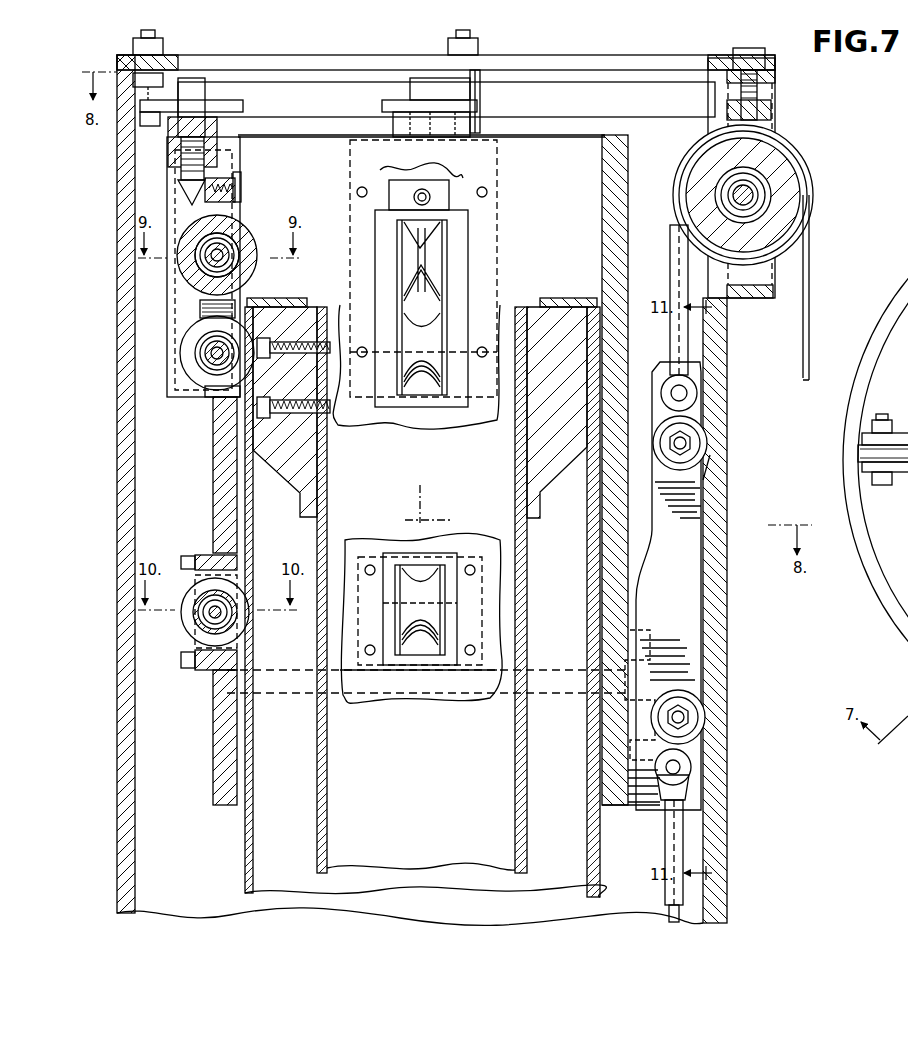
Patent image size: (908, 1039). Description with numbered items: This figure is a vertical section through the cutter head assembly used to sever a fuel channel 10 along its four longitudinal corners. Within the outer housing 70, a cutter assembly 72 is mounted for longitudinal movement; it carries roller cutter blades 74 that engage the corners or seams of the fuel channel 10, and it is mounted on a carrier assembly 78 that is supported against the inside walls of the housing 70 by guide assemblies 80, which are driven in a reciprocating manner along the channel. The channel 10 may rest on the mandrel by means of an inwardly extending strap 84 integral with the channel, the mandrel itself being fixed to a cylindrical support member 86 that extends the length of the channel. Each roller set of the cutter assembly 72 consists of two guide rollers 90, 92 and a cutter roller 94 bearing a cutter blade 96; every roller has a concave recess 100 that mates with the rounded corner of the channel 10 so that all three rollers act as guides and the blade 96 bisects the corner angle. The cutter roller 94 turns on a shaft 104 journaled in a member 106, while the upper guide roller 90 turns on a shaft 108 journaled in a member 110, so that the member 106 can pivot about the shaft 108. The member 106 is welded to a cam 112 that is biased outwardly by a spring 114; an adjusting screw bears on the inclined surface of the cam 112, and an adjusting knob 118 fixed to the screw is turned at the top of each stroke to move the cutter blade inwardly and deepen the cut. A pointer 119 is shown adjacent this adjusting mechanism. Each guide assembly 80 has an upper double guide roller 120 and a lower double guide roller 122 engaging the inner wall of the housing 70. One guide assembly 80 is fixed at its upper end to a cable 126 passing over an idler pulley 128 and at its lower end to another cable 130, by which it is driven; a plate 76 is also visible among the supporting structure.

The fuel channel 10 is at (248, 850).
The outer housing 70 is at (716, 409).
The cutter assembly 72 is at (647, 590).
The roller cutter blade 74 is at (260, 248).
The plate 76 is at (194, 682).
The carrier assembly 78 is at (213, 770).
The guide assembly 80 is at (704, 515).
The inwardly extending strap 84 is at (288, 304).
The cylindrical support member 86 is at (515, 802).
The upper guide roller 90 is at (205, 356).
The guide roller 92 is at (408, 560).
The cutter roller 94 is at (225, 262).
The cutter blade 96 is at (397, 226).
The concave recess 100 is at (450, 233).
The shaft 104 is at (232, 262).
The member 106 is at (205, 312).
The shaft 108 is at (205, 368).
The member 110 is at (170, 322).
The cam 112 is at (228, 194).
The spring 114 is at (236, 198).
The adjusting knob 118 is at (230, 101).
The pointer 119 is at (181, 190).
The upper double guide roller 120 is at (703, 452).
The lower double guide roller 122 is at (700, 727).
The cable 126 is at (810, 292).
The idler pulley 128 is at (800, 190).
The cable 130 is at (683, 893).